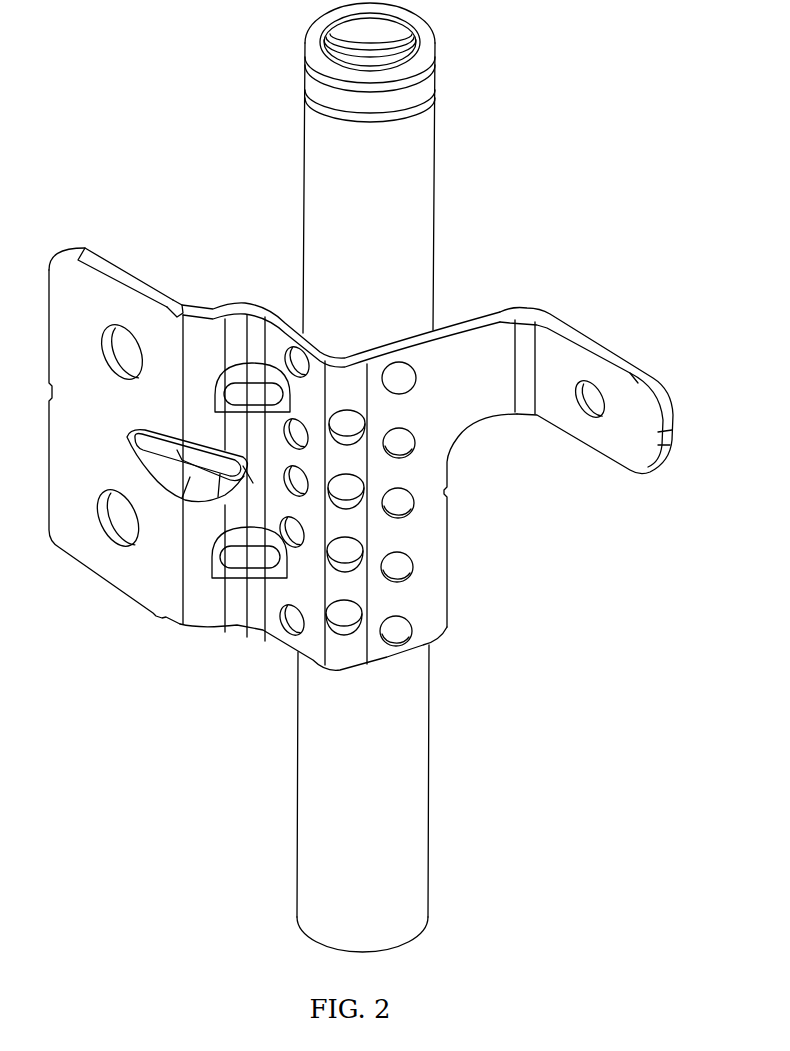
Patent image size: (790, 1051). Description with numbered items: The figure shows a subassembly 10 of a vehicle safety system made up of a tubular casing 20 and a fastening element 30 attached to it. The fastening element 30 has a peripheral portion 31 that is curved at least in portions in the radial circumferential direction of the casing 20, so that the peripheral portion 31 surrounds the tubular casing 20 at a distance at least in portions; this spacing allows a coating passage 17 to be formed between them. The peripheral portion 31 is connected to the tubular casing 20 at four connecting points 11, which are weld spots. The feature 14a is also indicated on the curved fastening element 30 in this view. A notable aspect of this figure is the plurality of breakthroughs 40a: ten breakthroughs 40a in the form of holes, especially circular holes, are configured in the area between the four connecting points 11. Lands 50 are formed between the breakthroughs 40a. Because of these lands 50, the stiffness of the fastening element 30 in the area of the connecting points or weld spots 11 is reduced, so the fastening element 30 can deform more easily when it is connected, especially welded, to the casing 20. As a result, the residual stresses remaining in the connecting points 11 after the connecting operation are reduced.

The subassembly 10 is at (124, 38).
The tubular casing 20 is at (426, 177).
The fastening element 30 is at (484, 348).
The peripheral portion 31 is at (338, 660).
The connecting points 11 is at (294, 358).
The channel 14a is at (358, 427).
The coating passage 17 is at (411, 325).
The breakthroughs 40a is at (283, 440).
The lands 50 is at (280, 482).